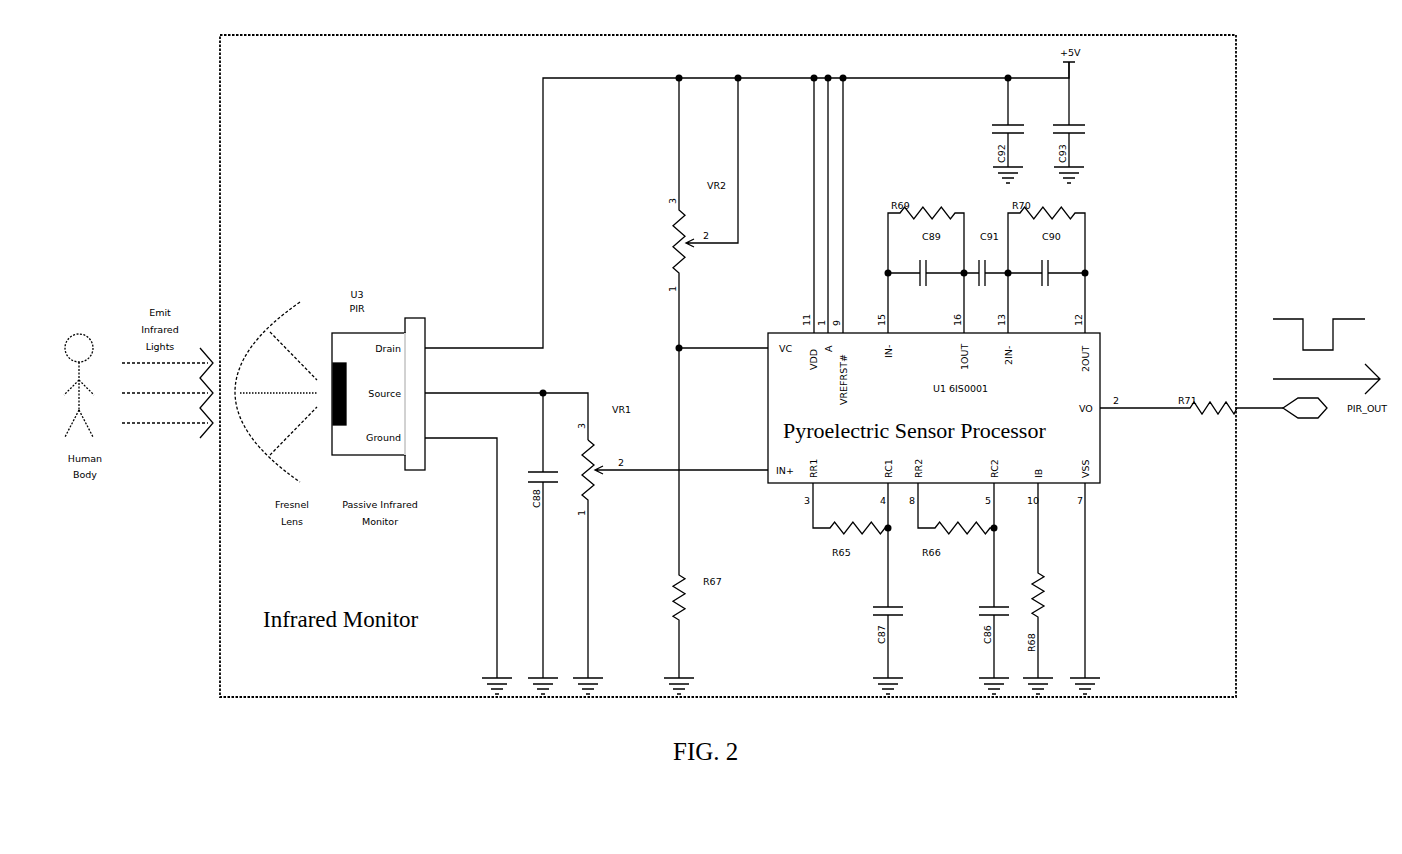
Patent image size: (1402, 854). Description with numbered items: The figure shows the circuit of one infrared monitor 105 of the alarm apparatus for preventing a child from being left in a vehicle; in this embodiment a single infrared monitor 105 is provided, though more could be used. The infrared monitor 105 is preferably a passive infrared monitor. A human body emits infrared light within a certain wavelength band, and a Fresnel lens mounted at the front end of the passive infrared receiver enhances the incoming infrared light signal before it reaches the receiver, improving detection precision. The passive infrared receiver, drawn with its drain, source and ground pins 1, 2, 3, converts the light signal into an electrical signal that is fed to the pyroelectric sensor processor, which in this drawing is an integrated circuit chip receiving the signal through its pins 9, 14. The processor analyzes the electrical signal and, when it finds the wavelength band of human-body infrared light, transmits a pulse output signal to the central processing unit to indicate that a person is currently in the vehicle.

The infrared monitor 105 is at (1236, 138).
The drain pin of passive infrared sensor 1 is at (750, 205).
The source pin of passive infrared sensor 2 is at (506, 410).
The ground pin of passive infrared sensor 3 is at (461, 551).
The VC pin of pyroelectric sensor processor 9 is at (723, 341).
The IN+ pin of pyroelectric sensor processor 14 is at (681, 465).